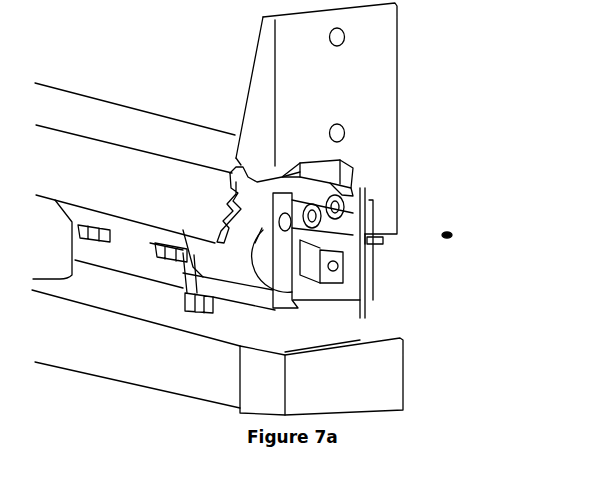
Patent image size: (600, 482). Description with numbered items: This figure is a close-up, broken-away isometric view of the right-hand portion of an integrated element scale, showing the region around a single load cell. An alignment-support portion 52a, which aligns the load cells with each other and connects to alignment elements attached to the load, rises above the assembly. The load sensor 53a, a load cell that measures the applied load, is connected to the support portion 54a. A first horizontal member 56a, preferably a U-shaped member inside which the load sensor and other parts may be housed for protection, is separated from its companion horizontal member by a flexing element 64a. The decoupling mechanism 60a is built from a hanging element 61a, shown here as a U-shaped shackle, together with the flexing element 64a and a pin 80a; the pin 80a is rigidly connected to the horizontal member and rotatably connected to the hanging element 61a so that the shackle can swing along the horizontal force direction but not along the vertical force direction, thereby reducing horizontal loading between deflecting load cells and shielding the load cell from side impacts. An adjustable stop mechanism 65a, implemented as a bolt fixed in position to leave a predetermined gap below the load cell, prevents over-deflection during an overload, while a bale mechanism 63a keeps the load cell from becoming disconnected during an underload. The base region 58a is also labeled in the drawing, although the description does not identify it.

The alignment-support portion 52a is at (385, 200).
The load sensor 53a is at (243, 280).
The support portion 54a is at (375, 362).
The first horizontal member 56a is at (157, 136).
The base 58a is at (128, 360).
The decoupling mechanism 60a is at (452, 233).
The hanging element 61a is at (380, 248).
The bale mechanism 63a is at (350, 283).
The flexing element 64a is at (350, 300).
The adjustable stop mechanism 65a is at (182, 288).
The pin 80a is at (357, 183).